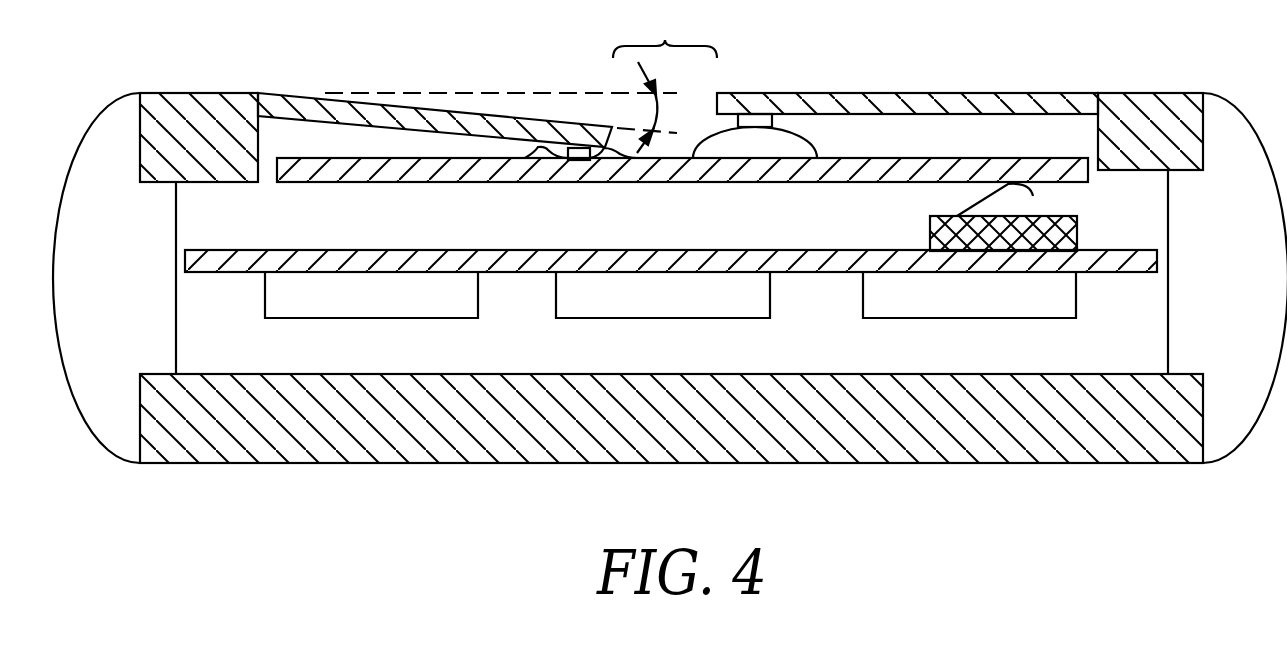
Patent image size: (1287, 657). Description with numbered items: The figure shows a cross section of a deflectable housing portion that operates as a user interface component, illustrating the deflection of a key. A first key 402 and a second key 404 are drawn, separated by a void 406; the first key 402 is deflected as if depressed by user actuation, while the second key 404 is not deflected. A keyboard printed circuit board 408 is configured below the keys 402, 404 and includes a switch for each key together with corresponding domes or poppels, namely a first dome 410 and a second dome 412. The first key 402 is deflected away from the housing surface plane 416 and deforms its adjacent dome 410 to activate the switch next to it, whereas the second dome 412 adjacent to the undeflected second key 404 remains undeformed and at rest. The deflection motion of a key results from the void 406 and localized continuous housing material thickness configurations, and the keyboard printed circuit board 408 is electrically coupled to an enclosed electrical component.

The first key 402 is at (468, 107).
The second key 404 is at (902, 93).
The void 406 is at (665, 41).
The keyboard printed circuit board 408 is at (1058, 160).
The first dome 410 is at (541, 147).
The second dome 412 is at (792, 147).
The housing surface plane 416 is at (378, 93).